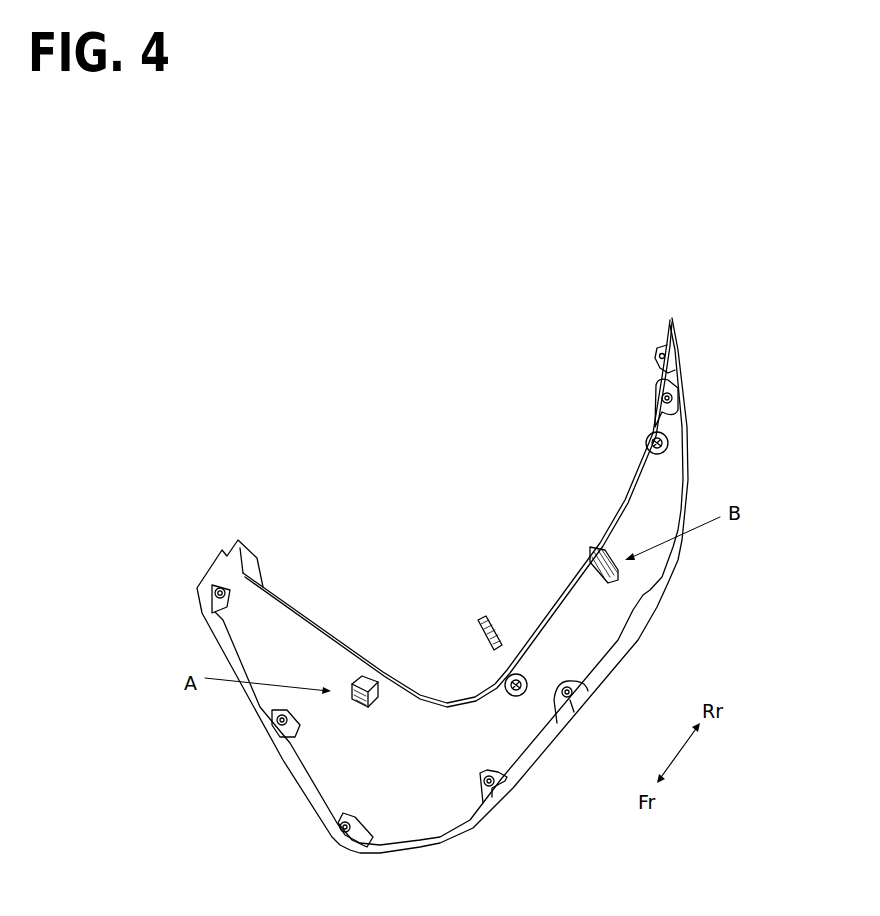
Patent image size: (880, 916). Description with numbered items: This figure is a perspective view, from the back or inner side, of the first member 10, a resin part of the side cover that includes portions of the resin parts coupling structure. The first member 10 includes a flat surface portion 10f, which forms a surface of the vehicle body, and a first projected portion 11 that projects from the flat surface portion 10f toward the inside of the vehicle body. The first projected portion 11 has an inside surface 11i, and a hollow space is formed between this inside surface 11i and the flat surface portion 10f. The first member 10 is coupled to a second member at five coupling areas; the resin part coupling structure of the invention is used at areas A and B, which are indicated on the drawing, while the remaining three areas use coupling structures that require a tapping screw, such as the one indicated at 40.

The first member 10 is at (382, 490).
The flat surface portion 10f is at (398, 713).
The first projected portion 11 is at (373, 688).
The inside surface of the first projected portion 11i is at (361, 675).
The tapping screw 40 is at (504, 665).